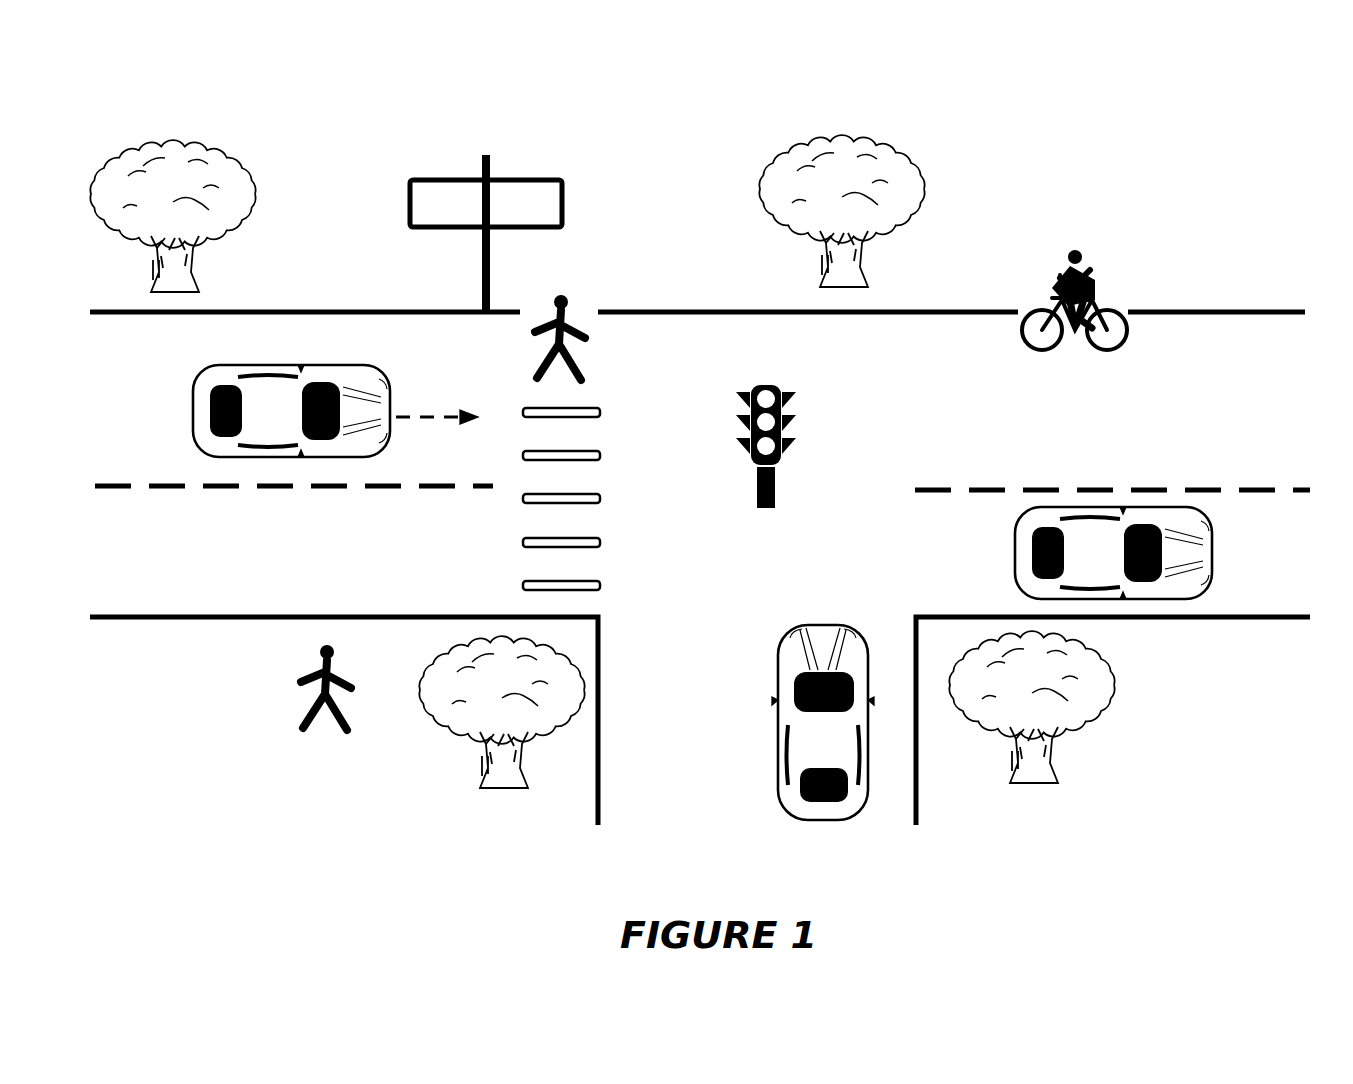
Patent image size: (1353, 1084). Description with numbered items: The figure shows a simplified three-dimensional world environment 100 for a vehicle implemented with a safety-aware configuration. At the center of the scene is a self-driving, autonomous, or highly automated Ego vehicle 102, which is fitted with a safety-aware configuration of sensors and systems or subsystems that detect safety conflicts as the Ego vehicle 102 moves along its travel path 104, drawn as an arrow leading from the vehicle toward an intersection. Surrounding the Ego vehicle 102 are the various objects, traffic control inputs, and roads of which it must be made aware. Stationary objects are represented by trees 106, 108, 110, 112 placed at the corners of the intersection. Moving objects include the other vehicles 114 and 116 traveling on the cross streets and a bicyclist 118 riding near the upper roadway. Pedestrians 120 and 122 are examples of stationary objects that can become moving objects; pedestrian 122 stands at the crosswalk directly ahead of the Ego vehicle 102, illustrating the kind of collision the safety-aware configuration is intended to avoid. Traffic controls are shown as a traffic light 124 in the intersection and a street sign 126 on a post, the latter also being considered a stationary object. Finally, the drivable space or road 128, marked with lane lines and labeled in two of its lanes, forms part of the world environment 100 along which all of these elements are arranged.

The world environment 100 is at (1100, 125).
The Ego vehicle 102 is at (352, 367).
The travel path 104 is at (432, 412).
The tree 106 is at (207, 168).
The tree 108 is at (890, 165).
The tree 110 is at (470, 742).
The tree 112 is at (1120, 698).
The vehicle 114 is at (838, 630).
The vehicle 116 is at (1212, 556).
The bicyclist 118 is at (1092, 276).
The pedestrian 120 is at (336, 662).
The pedestrian 122 is at (568, 298).
The traffic light 124 is at (792, 398).
The street sign 126 is at (516, 178).
The road 128 is at (300, 559).